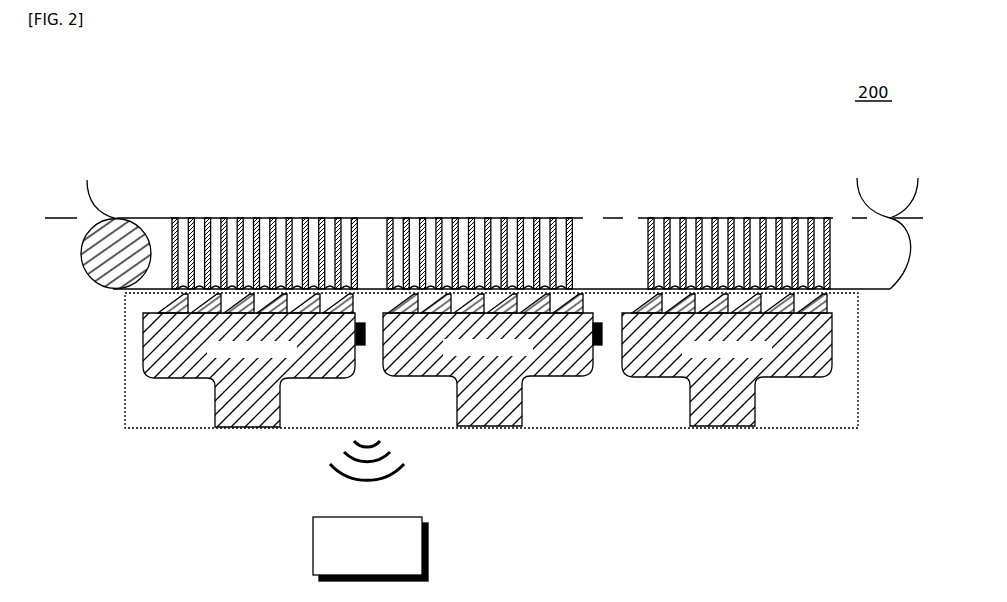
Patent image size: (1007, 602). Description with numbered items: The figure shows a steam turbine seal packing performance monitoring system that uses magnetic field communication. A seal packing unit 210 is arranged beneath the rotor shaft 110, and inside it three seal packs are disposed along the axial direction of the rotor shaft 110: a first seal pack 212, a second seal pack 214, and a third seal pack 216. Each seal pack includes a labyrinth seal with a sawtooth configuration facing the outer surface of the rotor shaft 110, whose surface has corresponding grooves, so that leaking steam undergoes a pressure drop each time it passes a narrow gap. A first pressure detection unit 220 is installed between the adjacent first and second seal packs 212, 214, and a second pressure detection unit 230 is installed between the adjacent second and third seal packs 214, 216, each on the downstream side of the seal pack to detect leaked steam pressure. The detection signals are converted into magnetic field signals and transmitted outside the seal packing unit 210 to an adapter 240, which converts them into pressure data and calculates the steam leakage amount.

The rotor shaft 110 is at (594, 240).
The seal packing unit 210 is at (858, 362).
The first seal pack 212 is at (280, 400).
The second seal pack 214 is at (522, 402).
The third seal pack 216 is at (755, 402).
The first pressure detection unit 220 is at (361, 347).
The second pressure detection unit 230 is at (597, 347).
The adapter 240 is at (428, 546).